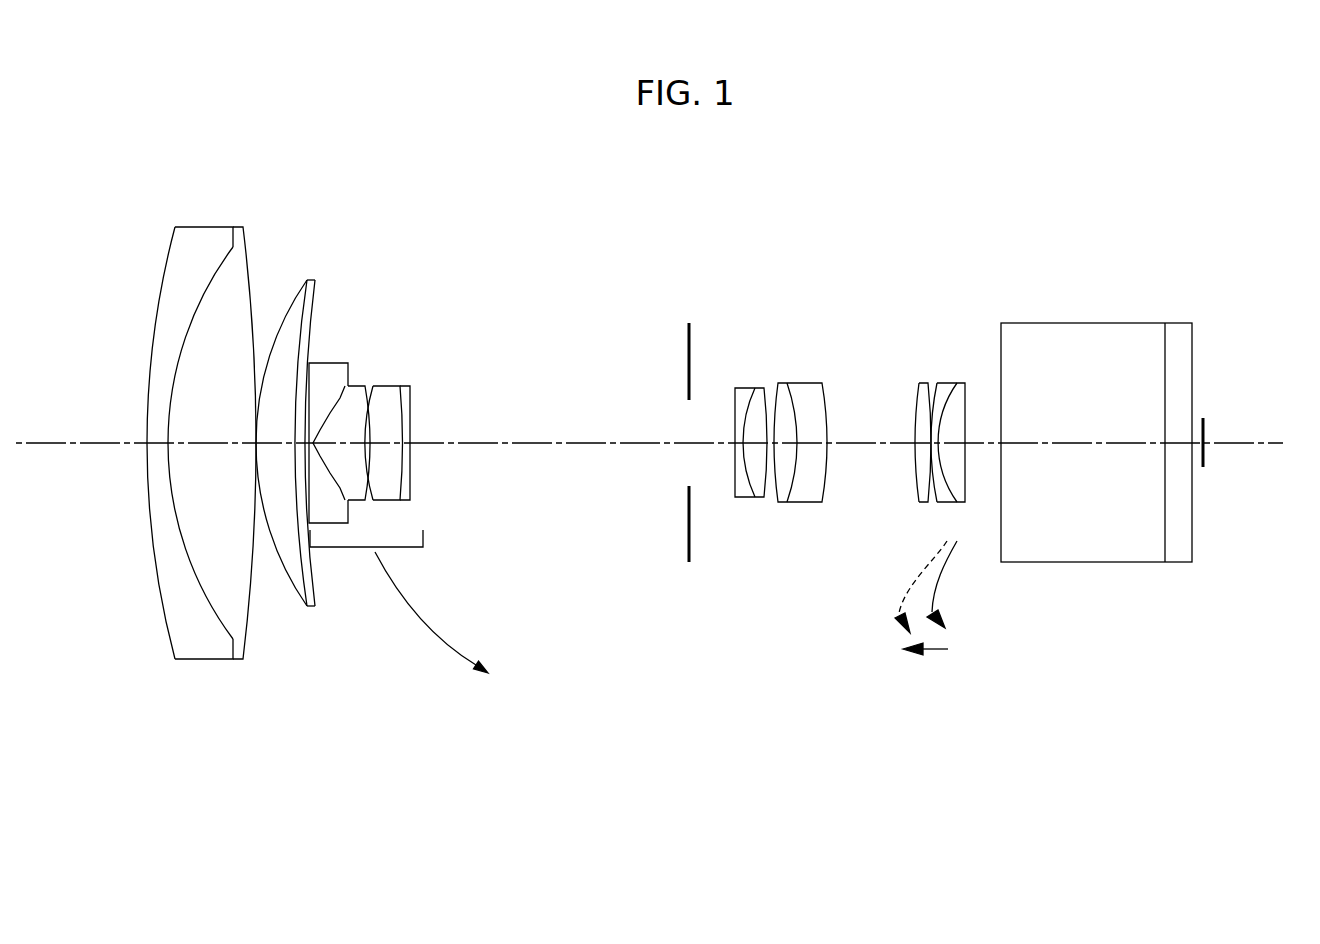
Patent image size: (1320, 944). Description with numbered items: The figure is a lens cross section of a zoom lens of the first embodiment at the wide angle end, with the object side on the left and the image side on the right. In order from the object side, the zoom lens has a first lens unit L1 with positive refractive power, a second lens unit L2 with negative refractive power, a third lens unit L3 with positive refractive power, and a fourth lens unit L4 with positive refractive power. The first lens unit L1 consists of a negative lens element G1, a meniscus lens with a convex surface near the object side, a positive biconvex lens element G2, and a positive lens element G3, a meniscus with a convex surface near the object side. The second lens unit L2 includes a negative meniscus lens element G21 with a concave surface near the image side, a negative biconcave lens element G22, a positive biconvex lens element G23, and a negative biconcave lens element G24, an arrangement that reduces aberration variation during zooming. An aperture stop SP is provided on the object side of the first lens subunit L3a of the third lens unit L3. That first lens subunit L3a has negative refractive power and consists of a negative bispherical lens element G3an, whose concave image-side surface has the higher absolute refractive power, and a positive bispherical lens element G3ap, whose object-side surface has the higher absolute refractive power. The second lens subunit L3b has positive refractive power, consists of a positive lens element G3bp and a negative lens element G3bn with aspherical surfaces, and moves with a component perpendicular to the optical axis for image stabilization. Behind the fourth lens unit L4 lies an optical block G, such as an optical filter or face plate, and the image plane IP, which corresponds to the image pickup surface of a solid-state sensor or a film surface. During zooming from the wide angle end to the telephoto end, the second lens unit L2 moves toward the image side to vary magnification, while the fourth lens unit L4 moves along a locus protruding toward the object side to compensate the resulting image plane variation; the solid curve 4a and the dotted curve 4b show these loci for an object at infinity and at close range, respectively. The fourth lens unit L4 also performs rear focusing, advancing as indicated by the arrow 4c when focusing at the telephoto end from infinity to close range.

The first lens unit L1 is at (327, 227).
The second lens unit L2 is at (430, 268).
The third lens unit L3 is at (710, 333).
The first lens subunit L3a is at (768, 382).
The second lens subunit L3b is at (772, 373).
The fourth lens unit L4 is at (975, 372).
The negative lens element G1 is at (192, 648).
The positive lens element G2 is at (237, 618).
The positive lens element G3 is at (302, 585).
The negative meniscus lens element G21 is at (330, 373).
The negative biconcave lens element G22 is at (358, 392).
The positive biconvex lens element G23 is at (382, 392).
The negative biconcave lens element G24 is at (407, 390).
The aperture stop SP is at (685, 335).
The negative bispherical lens element G3an is at (737, 490).
The positive bispherical lens element G3ap is at (758, 488).
The positive lens element G3bp is at (780, 503).
The negative lens element G3bn is at (810, 503).
The optical block G is at (1197, 317).
The image plane IP is at (1207, 428).
The solid curve 4a is at (930, 597).
The dotted curve 4b is at (898, 598).
The arrow 4c is at (937, 650).